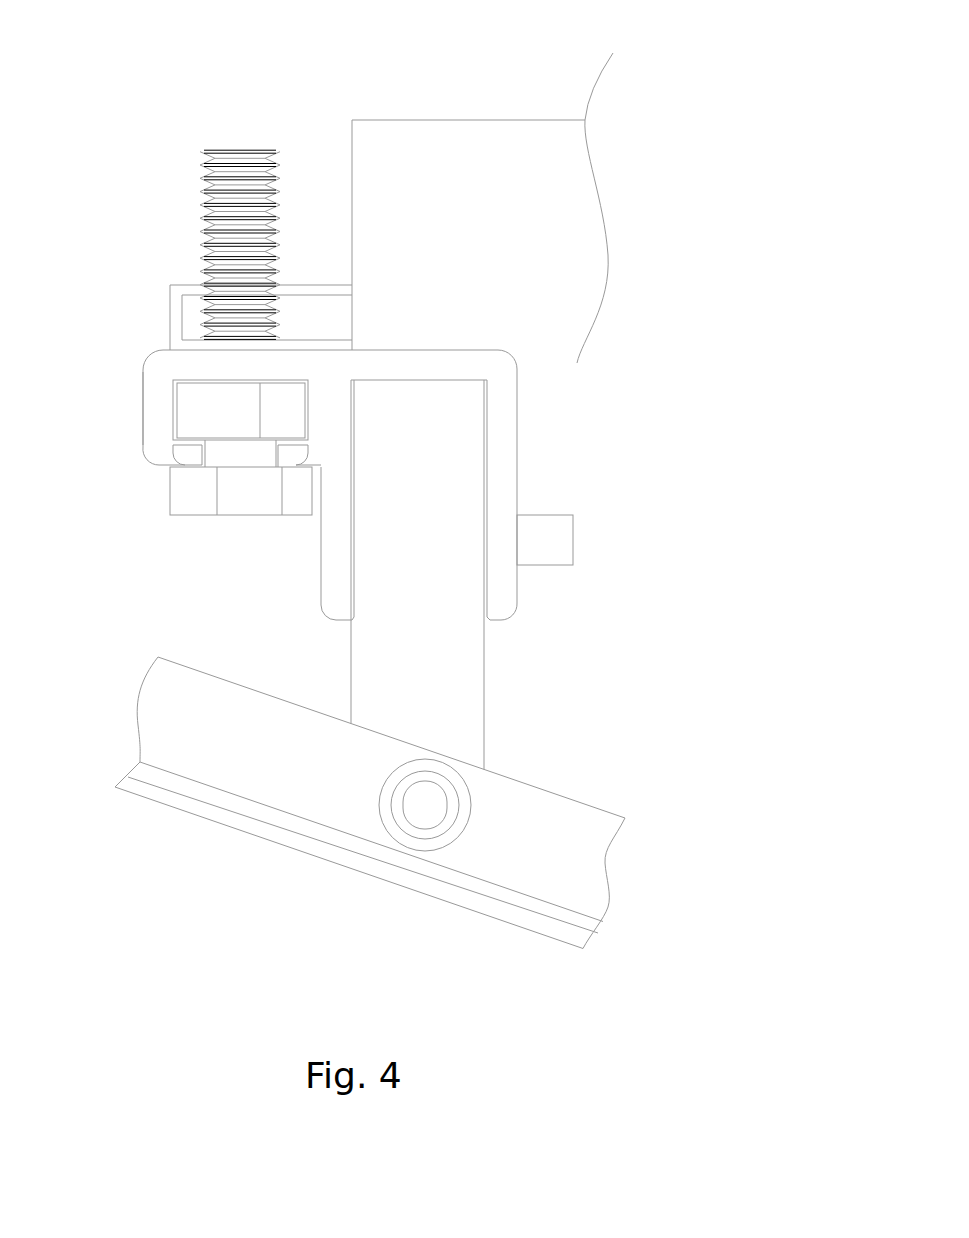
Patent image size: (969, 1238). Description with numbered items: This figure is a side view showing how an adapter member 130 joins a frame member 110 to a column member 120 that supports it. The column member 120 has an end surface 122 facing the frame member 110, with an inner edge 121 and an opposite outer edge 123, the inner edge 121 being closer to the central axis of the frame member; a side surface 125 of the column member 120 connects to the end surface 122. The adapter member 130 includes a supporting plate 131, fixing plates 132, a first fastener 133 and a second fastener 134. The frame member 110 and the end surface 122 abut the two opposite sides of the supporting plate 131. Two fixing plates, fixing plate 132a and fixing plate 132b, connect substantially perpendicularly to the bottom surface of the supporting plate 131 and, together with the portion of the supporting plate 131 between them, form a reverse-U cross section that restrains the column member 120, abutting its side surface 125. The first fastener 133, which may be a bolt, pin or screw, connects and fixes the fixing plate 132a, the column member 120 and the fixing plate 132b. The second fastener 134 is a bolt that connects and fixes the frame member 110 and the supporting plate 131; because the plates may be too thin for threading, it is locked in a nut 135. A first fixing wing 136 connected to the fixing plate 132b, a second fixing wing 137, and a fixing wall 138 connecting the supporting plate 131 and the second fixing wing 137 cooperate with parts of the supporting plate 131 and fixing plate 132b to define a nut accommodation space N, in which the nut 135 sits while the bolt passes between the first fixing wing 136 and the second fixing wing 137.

The frame member 110 is at (541, 120).
The column member 120 is at (393, 664).
The inner edge 121 is at (483, 380).
The end surface 122 is at (418, 380).
The outer edge 123 is at (353, 382).
The side surface 125 is at (354, 677).
The adapter member 130 is at (637, 391).
The supporting plate 131 is at (335, 412).
The fixing plate 132 is at (546, 517).
The fixing plate 132a is at (503, 577).
The fixing plate 132b is at (335, 580).
The first fastener 133 is at (560, 538).
The second fastener 134 is at (211, 502).
The nut 135 is at (187, 420).
The nut accommodation space N is at (171, 408).
The first fixing wing 136 is at (300, 455).
The second fixing wing 137 is at (182, 455).
The fixing wall 138 is at (156, 385).